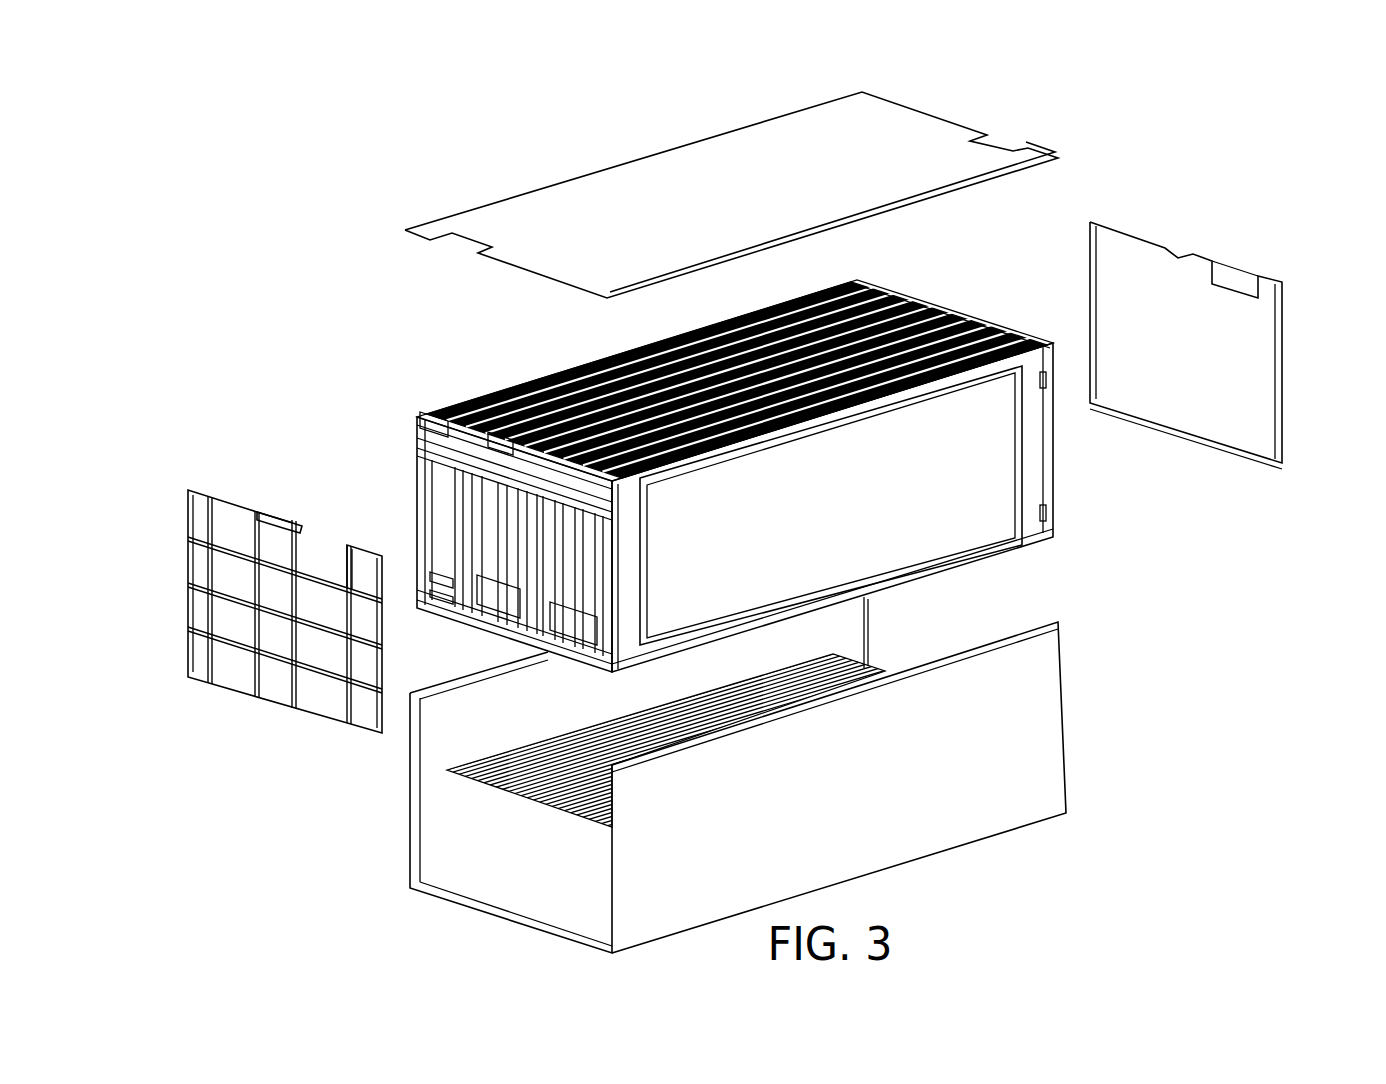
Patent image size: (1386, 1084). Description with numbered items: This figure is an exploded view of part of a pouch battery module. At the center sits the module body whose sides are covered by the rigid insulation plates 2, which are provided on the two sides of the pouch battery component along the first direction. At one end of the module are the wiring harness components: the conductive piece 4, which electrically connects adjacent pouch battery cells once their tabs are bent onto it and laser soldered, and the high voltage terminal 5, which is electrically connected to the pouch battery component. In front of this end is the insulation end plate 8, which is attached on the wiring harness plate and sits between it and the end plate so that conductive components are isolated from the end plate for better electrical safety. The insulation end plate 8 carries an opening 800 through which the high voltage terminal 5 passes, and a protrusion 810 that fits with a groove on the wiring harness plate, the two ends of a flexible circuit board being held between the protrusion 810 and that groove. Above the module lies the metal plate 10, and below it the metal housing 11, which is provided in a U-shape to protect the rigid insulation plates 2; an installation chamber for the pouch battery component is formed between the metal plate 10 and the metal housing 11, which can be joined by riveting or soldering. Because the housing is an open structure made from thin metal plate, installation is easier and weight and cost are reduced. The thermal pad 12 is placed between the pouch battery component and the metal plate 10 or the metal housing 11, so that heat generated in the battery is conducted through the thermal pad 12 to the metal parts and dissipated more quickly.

The rigid insulation plate 2 is at (898, 443).
The conductive piece 4 is at (573, 362).
The high voltage terminal 5 is at (450, 407).
The insulation end plate 8 is at (287, 571).
The opening 800 is at (223, 520).
The protrusion 810 is at (292, 515).
The metal plate 10 is at (805, 162).
The metal housing 11 is at (796, 737).
The thermal pad 12 is at (875, 653).